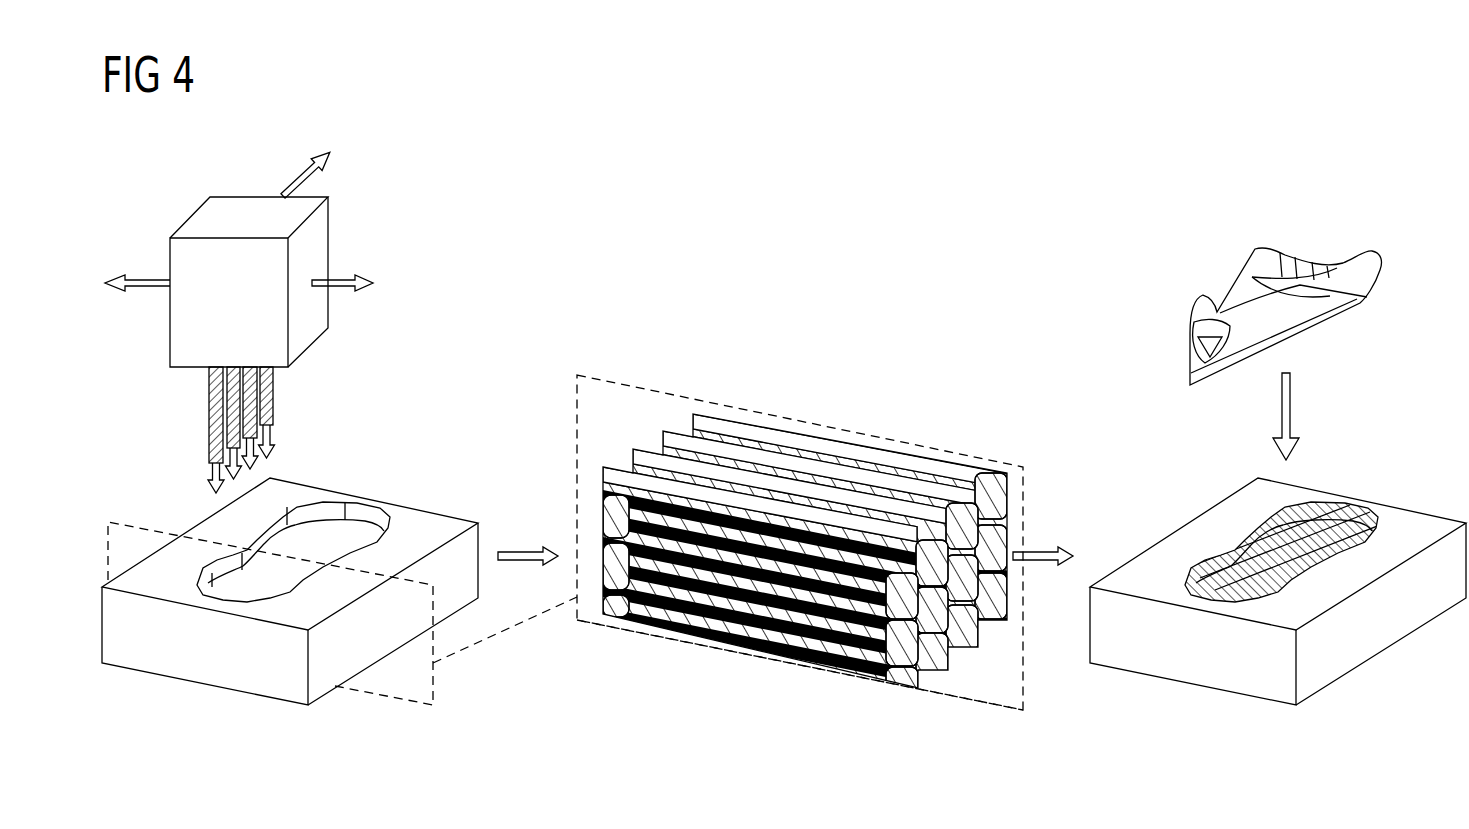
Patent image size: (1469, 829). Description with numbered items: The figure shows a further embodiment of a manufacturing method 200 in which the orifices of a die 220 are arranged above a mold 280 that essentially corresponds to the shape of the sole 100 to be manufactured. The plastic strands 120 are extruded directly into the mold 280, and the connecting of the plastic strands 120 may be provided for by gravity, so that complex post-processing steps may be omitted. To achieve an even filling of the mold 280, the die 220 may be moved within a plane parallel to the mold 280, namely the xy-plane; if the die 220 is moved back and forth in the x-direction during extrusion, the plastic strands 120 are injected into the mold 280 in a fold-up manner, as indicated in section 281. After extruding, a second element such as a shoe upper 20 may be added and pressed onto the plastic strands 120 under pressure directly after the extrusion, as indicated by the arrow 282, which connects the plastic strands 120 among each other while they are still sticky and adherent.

The shoe upper 20 is at (1355, 270).
The sole 100 is at (1360, 550).
The plastic strands 120 is at (212, 428).
The manufacturing method 200 is at (808, 227).
The die 220 is at (207, 218).
The mold 280 is at (217, 663).
The section 281 is at (800, 668).
The arrow 282 is at (1308, 416).